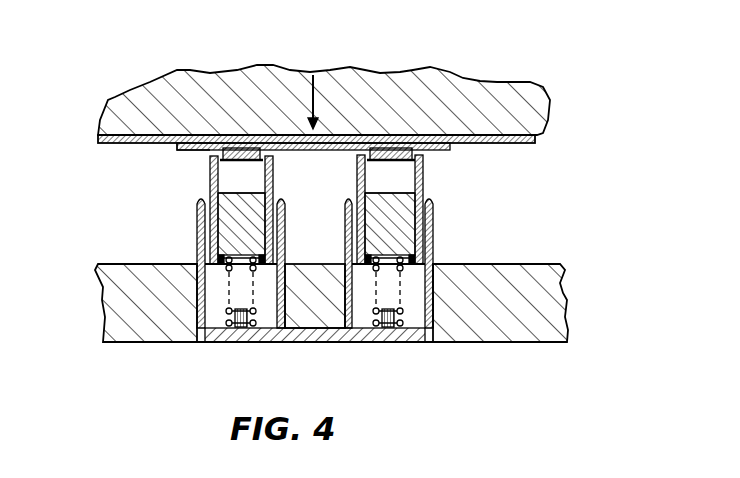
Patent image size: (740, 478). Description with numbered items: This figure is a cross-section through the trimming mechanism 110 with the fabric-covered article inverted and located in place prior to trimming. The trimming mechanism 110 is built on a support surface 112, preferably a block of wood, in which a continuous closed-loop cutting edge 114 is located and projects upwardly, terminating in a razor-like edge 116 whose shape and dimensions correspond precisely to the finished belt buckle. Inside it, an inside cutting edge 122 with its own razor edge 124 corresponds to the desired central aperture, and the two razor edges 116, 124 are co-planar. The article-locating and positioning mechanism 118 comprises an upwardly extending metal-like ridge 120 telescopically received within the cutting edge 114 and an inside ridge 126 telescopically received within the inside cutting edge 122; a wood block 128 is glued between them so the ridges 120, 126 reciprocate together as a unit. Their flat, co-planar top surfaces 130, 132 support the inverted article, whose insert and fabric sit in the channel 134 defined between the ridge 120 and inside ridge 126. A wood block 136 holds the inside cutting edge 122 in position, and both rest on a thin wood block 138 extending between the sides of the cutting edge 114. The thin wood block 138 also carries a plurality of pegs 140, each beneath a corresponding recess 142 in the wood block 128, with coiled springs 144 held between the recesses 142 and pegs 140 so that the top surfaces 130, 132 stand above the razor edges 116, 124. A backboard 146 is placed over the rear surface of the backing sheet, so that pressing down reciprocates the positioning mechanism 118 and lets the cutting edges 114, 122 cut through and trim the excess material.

The trimming mechanism 110 is at (535, 219).
The support surface 112 is at (560, 300).
The cutting edge 114 is at (459, 275).
The razor-like edge 116 is at (434, 198).
The article-locating and positioning mechanism 118 is at (445, 163).
The ridge 120 is at (210, 178).
The inside cutting edge 122 is at (285, 230).
The razor edge 124 is at (285, 198).
The inside ridge 126 is at (273, 164).
The wood block 128 is at (230, 217).
The top surface 130 is at (210, 155).
The top surface 132 is at (354, 157).
The channel 134 is at (405, 177).
The wood block 136 is at (323, 313).
The thin wood block 138 is at (380, 325).
The pegs 140 is at (233, 338).
The recess 142 is at (223, 258).
The springs 144 is at (405, 326).
The backboard 146 is at (503, 90).